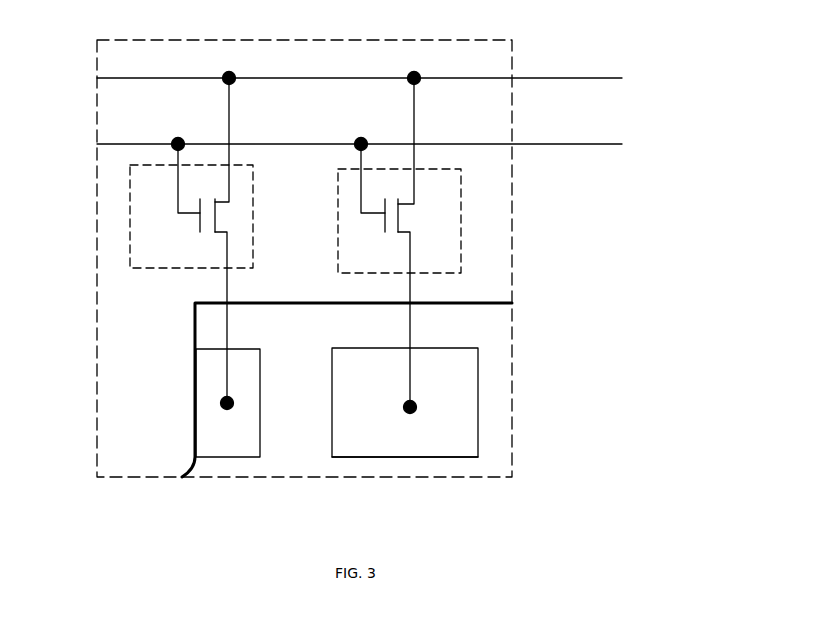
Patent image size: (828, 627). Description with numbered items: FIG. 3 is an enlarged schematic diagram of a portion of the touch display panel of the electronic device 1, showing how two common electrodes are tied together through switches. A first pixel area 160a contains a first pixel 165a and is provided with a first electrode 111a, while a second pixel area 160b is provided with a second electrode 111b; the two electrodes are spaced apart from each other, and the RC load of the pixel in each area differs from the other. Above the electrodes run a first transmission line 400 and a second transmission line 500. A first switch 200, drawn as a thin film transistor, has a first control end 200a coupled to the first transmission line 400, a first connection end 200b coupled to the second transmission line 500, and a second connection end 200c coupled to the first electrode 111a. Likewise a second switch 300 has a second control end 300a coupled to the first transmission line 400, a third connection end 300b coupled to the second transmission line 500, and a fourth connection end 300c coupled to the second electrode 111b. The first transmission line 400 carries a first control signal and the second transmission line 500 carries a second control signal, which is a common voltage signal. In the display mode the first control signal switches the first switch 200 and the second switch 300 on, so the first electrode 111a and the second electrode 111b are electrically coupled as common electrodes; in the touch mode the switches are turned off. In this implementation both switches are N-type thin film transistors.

The electronic device 1 is at (337, 40).
The second transmission line 500 is at (611, 78).
The first transmission line 400 is at (572, 144).
The first switch 200 is at (176, 241).
The first control end 200a is at (177, 210).
The first connection end 200b is at (230, 176).
The second connection end 200c is at (227, 250).
The second switch 300 is at (421, 243).
The second control end 300a is at (361, 186).
The third connection end 300b is at (414, 185).
The fourth connection end 300c is at (410, 255).
The first pixel area 160a is at (292, 411).
The first pixel 165a is at (207, 463).
The first electrode 111a is at (255, 450).
The second pixel area 160b is at (369, 489).
The second electrode 111b is at (438, 447).